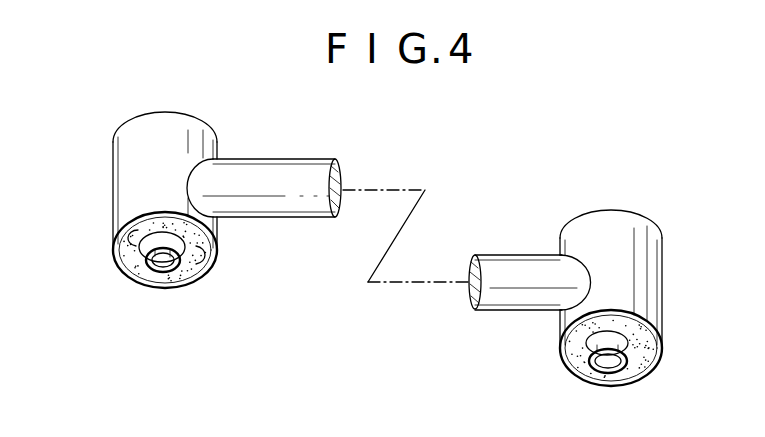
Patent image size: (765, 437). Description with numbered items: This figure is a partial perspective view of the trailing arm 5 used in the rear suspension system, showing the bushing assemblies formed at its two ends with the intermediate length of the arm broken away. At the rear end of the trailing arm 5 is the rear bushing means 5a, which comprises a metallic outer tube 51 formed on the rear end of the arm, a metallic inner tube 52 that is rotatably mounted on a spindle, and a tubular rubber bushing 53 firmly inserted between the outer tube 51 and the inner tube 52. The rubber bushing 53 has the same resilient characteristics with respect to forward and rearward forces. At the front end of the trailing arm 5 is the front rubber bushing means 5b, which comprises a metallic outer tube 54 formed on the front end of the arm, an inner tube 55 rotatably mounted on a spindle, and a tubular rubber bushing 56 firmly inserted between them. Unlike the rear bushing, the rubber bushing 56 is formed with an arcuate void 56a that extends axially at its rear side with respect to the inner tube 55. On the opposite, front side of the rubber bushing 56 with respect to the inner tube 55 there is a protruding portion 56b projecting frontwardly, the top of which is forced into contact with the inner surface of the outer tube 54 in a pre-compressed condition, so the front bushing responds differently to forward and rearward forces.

The trailing arm 5 is at (301, 211).
The rear bushing means 5a is at (603, 208).
The front rubber bushing means 5b is at (216, 121).
The outer tube 51 is at (645, 259).
The inner tube 52 is at (588, 343).
The rubber bushing 53 is at (650, 358).
The outer tube 54 is at (125, 199).
The inner tube 55 is at (168, 270).
The rubber bushing 56 is at (143, 283).
The arcuate void 56a is at (204, 262).
The protruding portion 56b is at (142, 250).